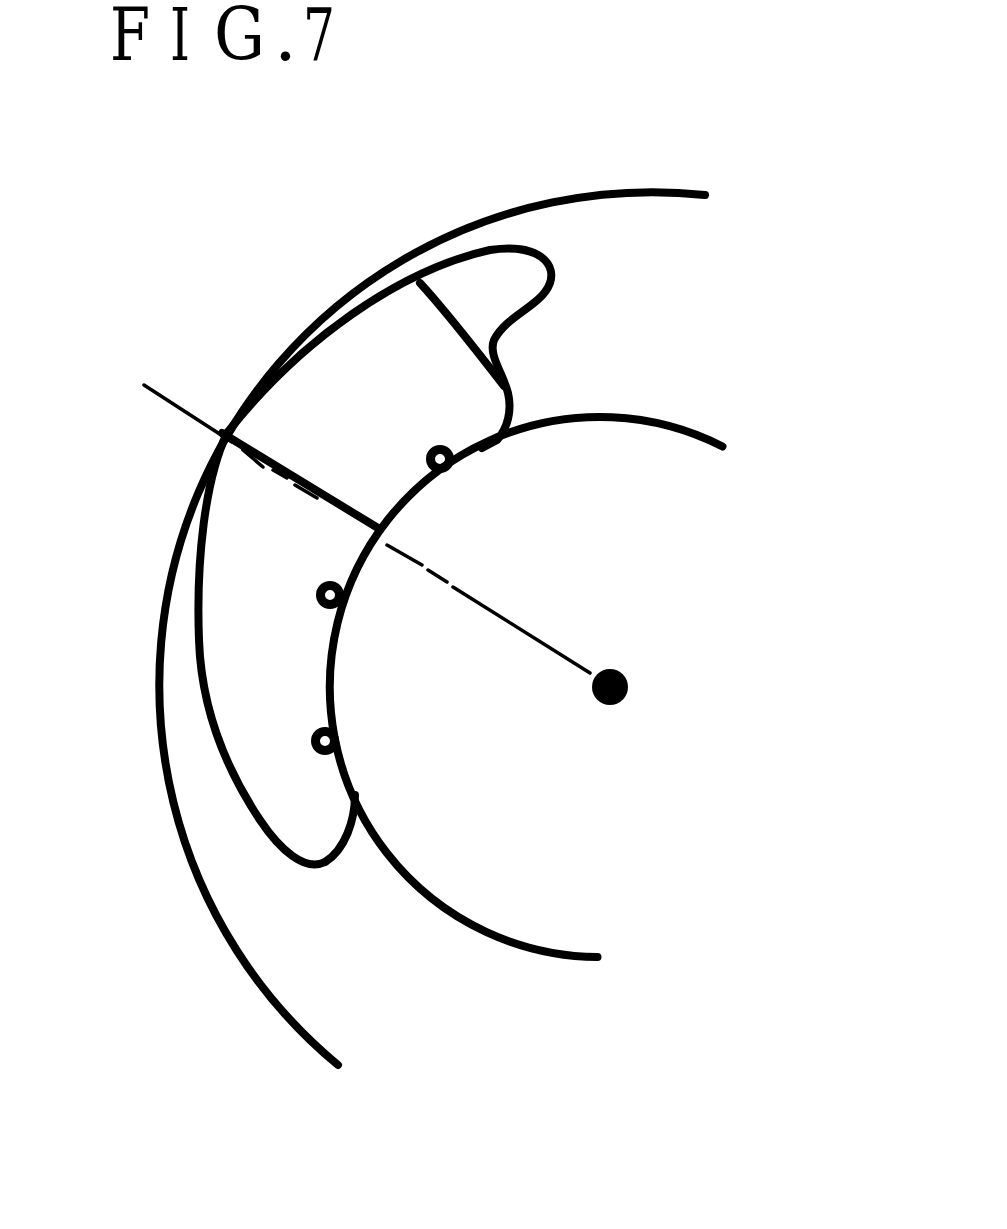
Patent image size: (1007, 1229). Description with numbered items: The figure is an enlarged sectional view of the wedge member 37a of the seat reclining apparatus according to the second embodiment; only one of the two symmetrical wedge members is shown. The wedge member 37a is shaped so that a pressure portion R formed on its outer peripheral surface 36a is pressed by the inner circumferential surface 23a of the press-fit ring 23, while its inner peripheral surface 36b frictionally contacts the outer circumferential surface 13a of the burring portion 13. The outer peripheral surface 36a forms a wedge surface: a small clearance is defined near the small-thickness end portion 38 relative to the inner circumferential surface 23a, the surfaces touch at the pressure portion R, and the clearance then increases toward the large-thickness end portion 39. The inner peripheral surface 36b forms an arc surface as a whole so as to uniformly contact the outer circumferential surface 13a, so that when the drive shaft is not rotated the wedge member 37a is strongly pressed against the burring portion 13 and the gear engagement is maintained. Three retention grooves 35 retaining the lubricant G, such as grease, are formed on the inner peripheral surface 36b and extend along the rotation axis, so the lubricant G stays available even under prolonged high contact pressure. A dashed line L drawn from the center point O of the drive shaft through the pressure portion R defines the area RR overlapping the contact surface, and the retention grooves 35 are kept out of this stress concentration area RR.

The press-fit ring 23 is at (675, 162).
The inner circumferential surface of the press-fit ring 23a is at (672, 202).
The burring portion 13 is at (707, 472).
The outer circumferential surface of the burring portion 13a is at (687, 430).
The large-thickness end portion 39 is at (478, 298).
The wedge member 37a is at (606, 306).
The dashed line L is at (517, 627).
The pressure portion R is at (220, 437).
The area RR is at (363, 530).
The center point O is at (628, 674).
The outer peripheral surface 36a is at (207, 707).
The inner peripheral surface 36b is at (353, 787).
The retention groove 35 is at (428, 455).
The lubricant G is at (436, 450).
The small-thickness end portion 38 is at (323, 840).